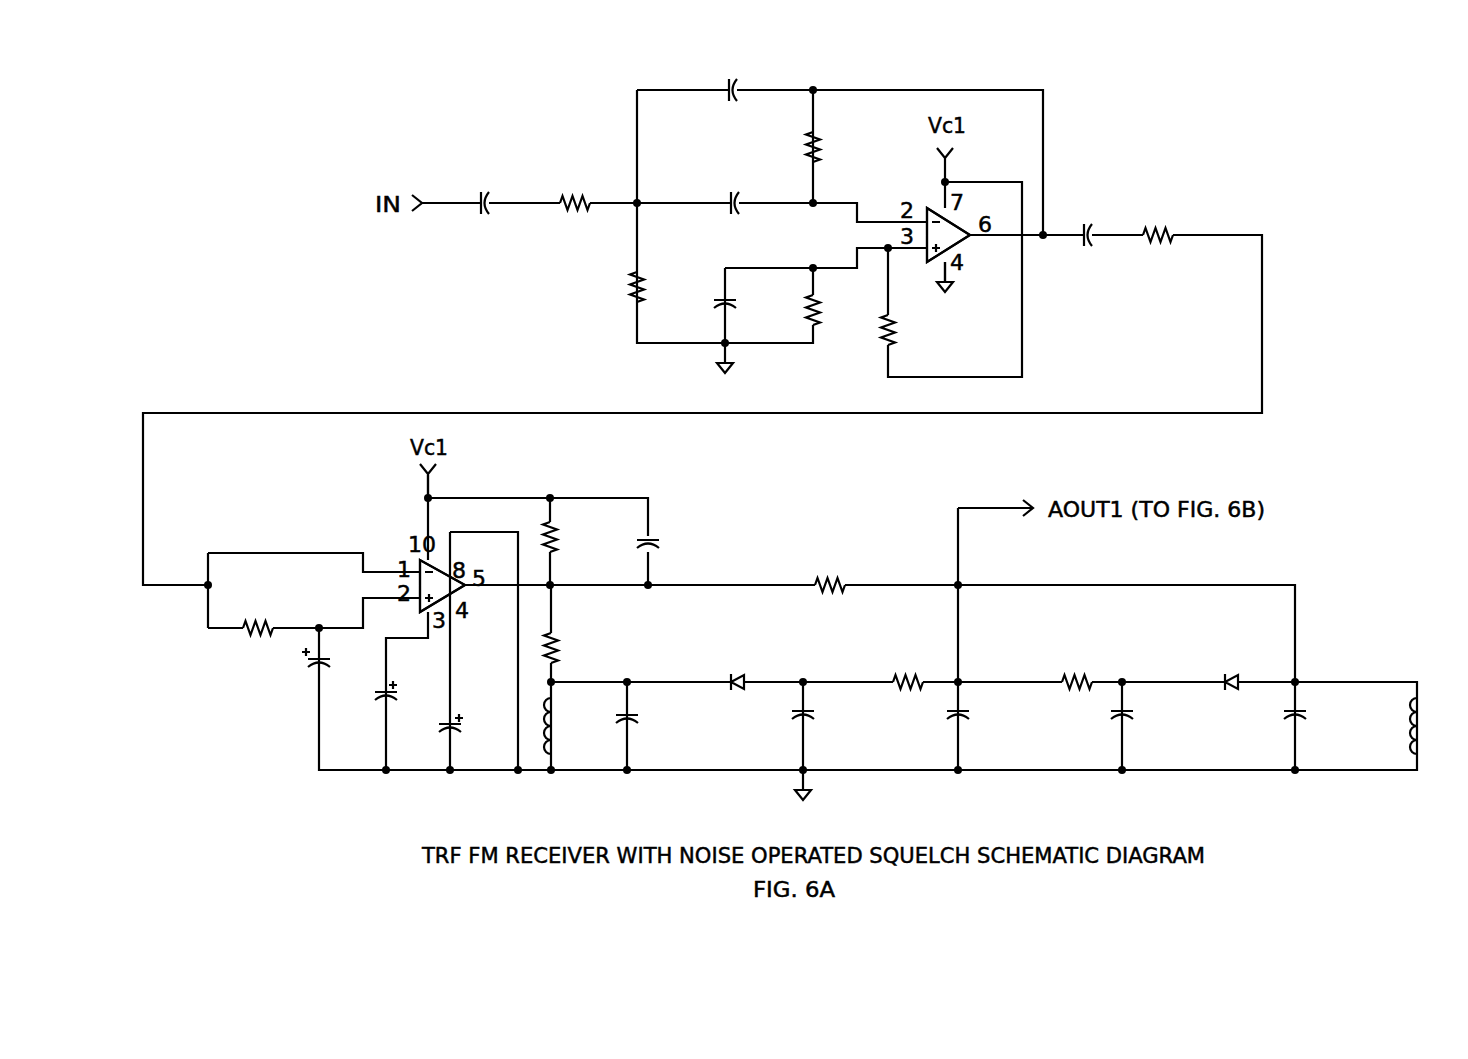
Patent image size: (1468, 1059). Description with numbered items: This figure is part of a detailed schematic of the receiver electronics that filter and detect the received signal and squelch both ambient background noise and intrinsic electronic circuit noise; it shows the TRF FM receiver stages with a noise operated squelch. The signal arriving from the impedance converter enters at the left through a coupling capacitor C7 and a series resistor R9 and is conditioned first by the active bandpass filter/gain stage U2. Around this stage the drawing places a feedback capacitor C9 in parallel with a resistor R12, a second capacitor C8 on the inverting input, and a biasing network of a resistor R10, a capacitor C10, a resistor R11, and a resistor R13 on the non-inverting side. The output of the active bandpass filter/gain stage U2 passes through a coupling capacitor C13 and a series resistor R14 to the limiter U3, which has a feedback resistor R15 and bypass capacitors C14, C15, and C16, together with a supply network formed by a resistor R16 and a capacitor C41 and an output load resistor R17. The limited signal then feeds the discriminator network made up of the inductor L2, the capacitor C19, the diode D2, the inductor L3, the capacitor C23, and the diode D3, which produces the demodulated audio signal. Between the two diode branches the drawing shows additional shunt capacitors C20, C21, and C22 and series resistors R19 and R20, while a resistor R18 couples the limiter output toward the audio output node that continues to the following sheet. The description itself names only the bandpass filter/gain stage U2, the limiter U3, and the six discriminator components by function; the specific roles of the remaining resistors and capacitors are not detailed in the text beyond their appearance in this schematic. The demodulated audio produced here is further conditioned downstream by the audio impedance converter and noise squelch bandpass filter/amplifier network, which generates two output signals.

The input coupling capacitor 0.027 C7 is at (482, 210).
The input resistor 9.1K R9 is at (576, 202).
The feedback capacitor 680pF C9 is at (735, 95).
The capacitor 680pF C8 is at (735, 205).
The resistor 39K R12 is at (837, 145).
The resistor 3.3K R10 is at (666, 293).
The capacitor 0.1 C10 is at (748, 305).
The resistor 10K R11 is at (837, 313).
The resistor 10K R13 is at (914, 326).
The active bandpass filter/gain stage U2 is at (932, 222).
The coupling capacitor 0.027 C13 is at (1087, 232).
The resistor 120 R14 is at (1163, 233).
The limiter U3 is at (419, 571).
The resistor 470 R15 is at (262, 630).
The capacitor 1uF C14 is at (340, 666).
The capacitor 1uF C15 is at (409, 699).
The capacitor 1uF C16 is at (474, 732).
The resistor 560 R16 is at (574, 546).
The capacitor 0.01 C41 is at (676, 550).
The resistor 5.1K R17 is at (580, 651).
The inductor of discriminator network L2 is at (575, 726).
The capacitor of discriminator network C19 is at (668, 722).
The diode of discriminator network D2 is at (736, 682).
The capacitor 0.001 C20 is at (837, 715).
The resistor 10K R18 is at (836, 587).
The resistor 51K R19 is at (913, 683).
The capacitor 680pF C21 is at (992, 715).
The resistor 51K R20 is at (1079, 683).
The capacitor 0.001 C22 is at (1156, 715).
The diode of discriminator network D3 is at (1230, 682).
The capacitor of discriminator network C23 is at (1335, 715).
The inductor of discriminator network L3 is at (1439, 726).